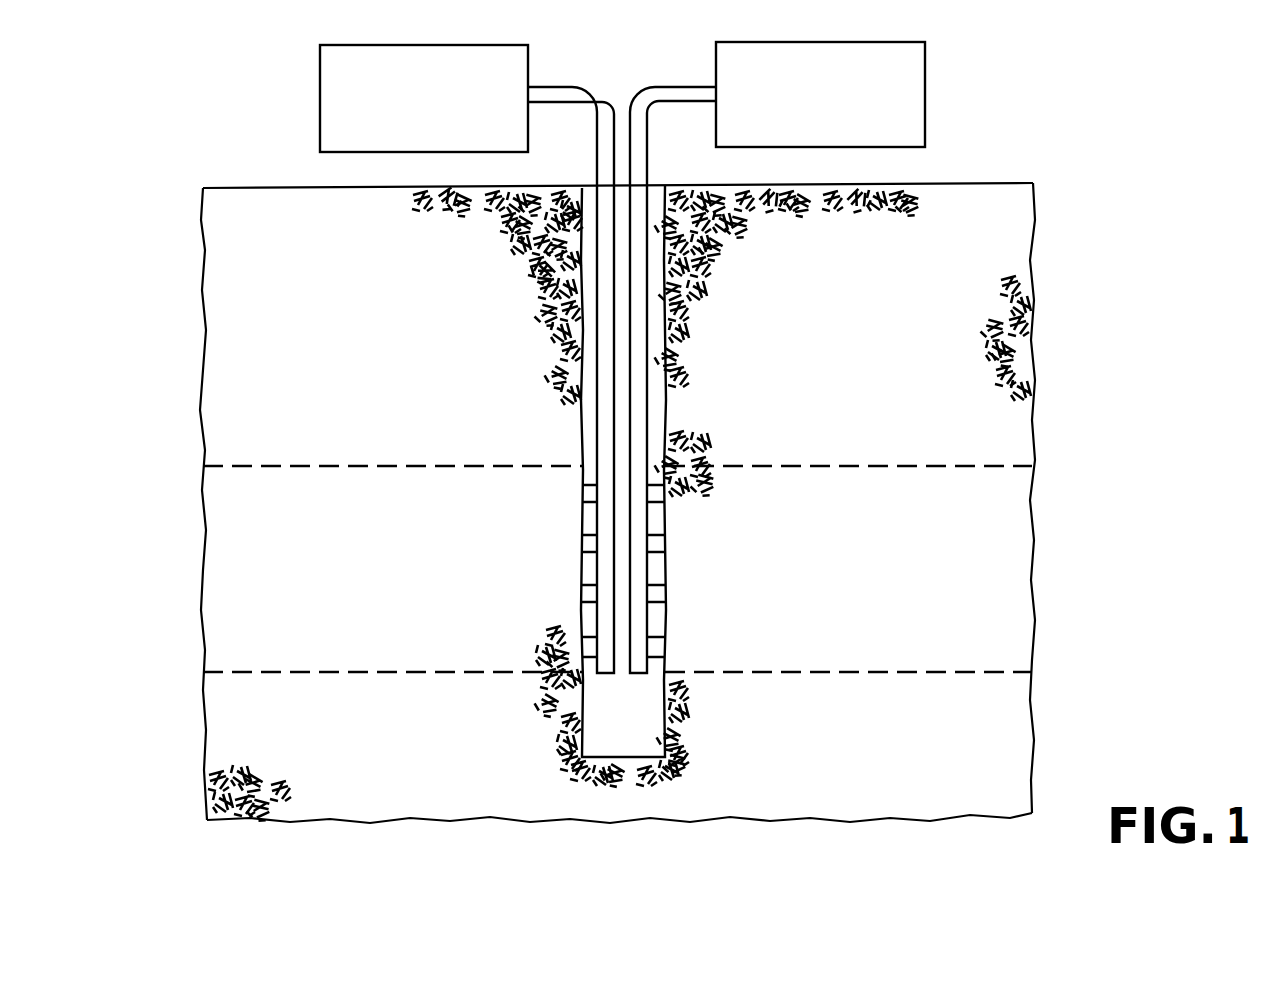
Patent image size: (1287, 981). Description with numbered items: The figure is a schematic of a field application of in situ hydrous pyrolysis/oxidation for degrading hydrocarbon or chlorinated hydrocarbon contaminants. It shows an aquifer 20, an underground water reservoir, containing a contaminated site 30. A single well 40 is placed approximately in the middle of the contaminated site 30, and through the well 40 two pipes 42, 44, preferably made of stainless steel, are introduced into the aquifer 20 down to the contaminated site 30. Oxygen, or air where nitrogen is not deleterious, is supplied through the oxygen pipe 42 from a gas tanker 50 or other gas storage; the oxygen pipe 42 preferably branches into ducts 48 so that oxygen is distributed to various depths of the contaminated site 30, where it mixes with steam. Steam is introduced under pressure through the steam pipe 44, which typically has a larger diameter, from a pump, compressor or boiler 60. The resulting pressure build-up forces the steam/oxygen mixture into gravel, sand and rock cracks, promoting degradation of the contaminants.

The aquifer 20 is at (400, 587).
The contaminated site 30 is at (1055, 460).
The well 40 is at (653, 385).
The oxygen pipe 42 is at (660, 87).
The steam pipe 44 is at (579, 86).
The ducts 48 is at (657, 597).
The gas tanker 50 is at (925, 90).
The boiler 60 is at (320, 93).